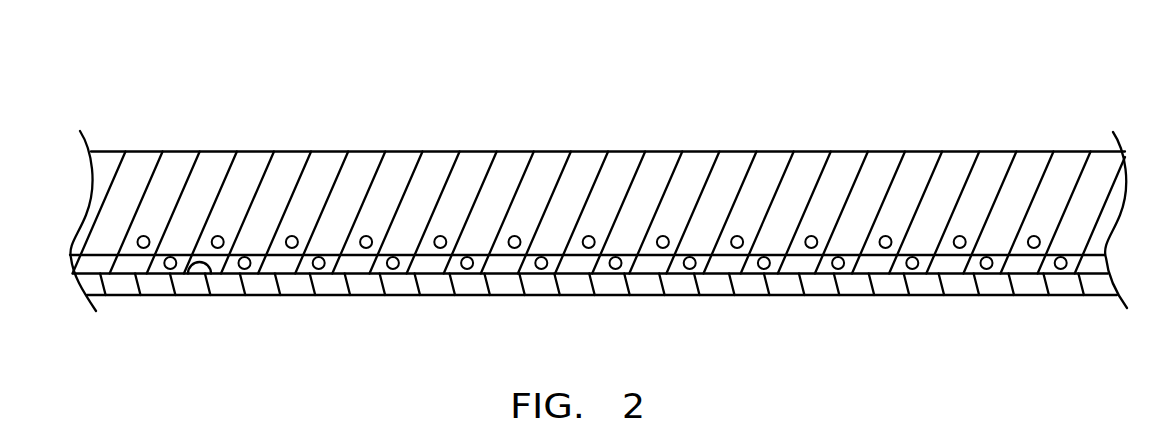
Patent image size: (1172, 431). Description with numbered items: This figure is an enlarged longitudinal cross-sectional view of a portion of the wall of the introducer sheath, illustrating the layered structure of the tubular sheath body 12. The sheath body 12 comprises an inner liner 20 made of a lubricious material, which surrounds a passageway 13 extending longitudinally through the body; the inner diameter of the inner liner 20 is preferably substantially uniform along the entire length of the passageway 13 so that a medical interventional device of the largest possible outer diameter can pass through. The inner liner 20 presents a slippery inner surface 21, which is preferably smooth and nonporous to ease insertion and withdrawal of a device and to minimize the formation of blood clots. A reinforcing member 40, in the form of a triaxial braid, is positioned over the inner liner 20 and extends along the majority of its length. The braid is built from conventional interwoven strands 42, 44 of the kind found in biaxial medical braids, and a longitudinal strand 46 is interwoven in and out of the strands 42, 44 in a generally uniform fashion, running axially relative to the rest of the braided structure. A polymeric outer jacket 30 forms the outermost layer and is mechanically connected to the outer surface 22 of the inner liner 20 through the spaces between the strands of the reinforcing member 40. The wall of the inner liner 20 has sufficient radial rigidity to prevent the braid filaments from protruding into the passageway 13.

The tubular sheath body 12 is at (598, 204).
The passageway 13 is at (390, 352).
The inner liner 20 is at (889, 281).
The inner surface 21 is at (997, 297).
The outer surface 22 is at (189, 272).
The polymeric outer jacket 30 is at (655, 178).
The reinforcing member 40 is at (470, 242).
The strands 42 is at (312, 272).
The strands 44 is at (370, 237).
The longitudinal strand 46 is at (700, 253).